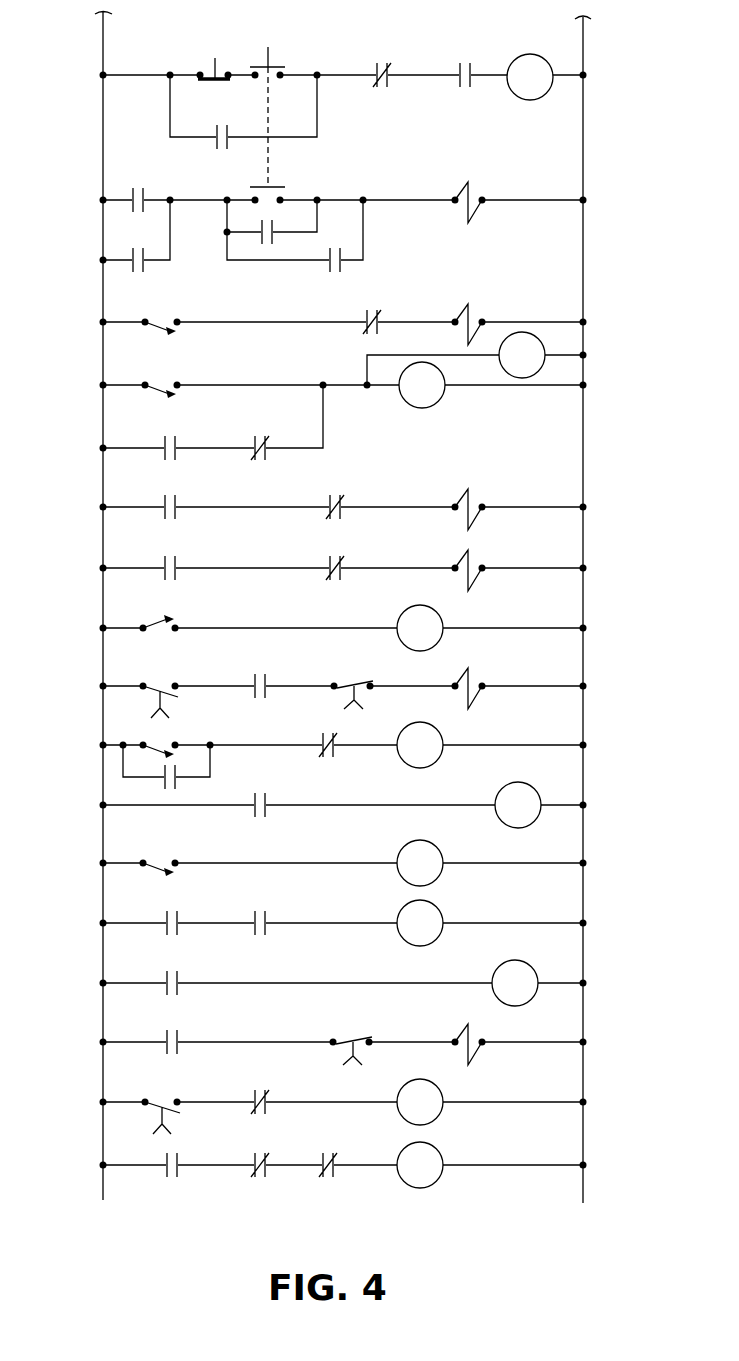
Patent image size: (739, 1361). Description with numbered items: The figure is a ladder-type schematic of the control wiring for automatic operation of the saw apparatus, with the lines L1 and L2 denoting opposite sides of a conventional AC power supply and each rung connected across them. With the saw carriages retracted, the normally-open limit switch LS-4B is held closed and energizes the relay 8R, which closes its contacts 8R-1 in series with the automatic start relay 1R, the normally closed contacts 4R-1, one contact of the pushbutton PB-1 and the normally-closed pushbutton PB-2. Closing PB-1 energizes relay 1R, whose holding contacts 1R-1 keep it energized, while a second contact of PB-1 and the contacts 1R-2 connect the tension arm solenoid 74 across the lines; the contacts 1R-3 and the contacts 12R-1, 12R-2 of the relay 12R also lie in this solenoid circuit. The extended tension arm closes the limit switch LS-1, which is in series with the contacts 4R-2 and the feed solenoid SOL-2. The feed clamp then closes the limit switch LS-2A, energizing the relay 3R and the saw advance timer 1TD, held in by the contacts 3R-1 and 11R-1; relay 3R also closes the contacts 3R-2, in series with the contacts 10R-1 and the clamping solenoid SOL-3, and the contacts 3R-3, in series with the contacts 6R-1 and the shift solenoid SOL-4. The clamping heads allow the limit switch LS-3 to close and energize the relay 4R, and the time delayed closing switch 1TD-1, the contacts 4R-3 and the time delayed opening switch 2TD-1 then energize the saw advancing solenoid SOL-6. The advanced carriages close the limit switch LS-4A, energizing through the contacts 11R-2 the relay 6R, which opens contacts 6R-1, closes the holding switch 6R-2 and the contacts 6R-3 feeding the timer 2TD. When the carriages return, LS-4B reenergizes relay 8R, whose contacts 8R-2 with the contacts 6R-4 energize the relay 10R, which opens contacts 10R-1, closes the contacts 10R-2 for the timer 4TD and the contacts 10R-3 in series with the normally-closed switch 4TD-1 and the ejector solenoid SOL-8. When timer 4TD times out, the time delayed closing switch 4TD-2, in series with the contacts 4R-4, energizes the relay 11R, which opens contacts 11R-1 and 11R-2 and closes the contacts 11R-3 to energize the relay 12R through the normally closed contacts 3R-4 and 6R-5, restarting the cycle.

The power supply line L1 is at (102, 123).
The power supply line L2 is at (584, 123).
The normally-open pushbutton PB-1 is at (268, 47).
The normally-closed pushbutton PB-2 is at (215, 59).
The automatic start relay 1R is at (530, 77).
The holding contacts 1R-1 is at (223, 150).
The relay contacts 1R-2 is at (138, 188).
The relay contacts 1R-3 is at (272, 220).
The normally closed relay contacts 4R-1 is at (383, 63).
The normally-open switch contacts 8R-1 is at (465, 63).
The switch contacts 12R-1 is at (139, 273).
The switch contacts 12R-2 is at (336, 273).
The tension arm solenoid 74 is at (466, 185).
The normally-open limit switch LS-1 is at (158, 329).
The normally-closed relay contacts 4R-2 is at (365, 333).
The solenoid SOL-2 is at (469, 306).
The saw advance timer 1TD is at (522, 355).
The normally-open limit switch LS-2A is at (162, 384).
The relay 3R is at (422, 385).
The holding contacts 3R-1 is at (172, 437).
The normally-closed relay contacts 11R-1 is at (257, 434).
The relay contacts 3R-2 is at (170, 495).
The normally closed relay contacts 10R-1 is at (333, 492).
The solenoid SOL-3 is at (469, 490).
The relay contacts 3R-3 is at (170, 556).
The normally-closed contacts 6R-1 is at (333, 553).
The solenoid SOL-4 is at (499, 562).
The normally-closed limit switch LS-3 is at (172, 619).
The relay 4R is at (420, 628).
The time delayed closing switch 1TD-1 is at (162, 683).
The switch contacts 4R-3 is at (260, 674).
The time delayed opening switch 2TD-1 is at (350, 683).
The solenoid SOL-6 is at (470, 680).
The normally-open limit switch LS-4A is at (160, 745).
The normally-closed switch contacts 11R-2 is at (330, 757).
The relay 6R is at (420, 745).
The holding switch 6R-2 is at (168, 789).
The relay contacts 6R-3 is at (260, 793).
The timer 2TD is at (518, 805).
The normally-open limit switch LS-4B is at (160, 863).
The relay 8R is at (420, 863).
The relay contacts 8R-2 is at (172, 910).
The relay contacts 6R-4 is at (260, 910).
The relay 10R is at (420, 923).
The relay contacts 10R-2 is at (174, 972).
The timer 4TD is at (515, 983).
The relay contacts 10R-3 is at (174, 1030).
The time delayed opening switch 4TD-1 is at (350, 1036).
The solenoid SOL-8 is at (476, 1055).
The time delayed closing switch 4TD-2 is at (157, 1100).
The normally closed relay contacts 4R-4 is at (262, 1090).
The relay 11R is at (420, 1102).
The relay contacts 11R-3 is at (172, 1178).
The normally closed contacts 3R-4 is at (260, 1178).
The normally closed contacts 6R-5 is at (335, 1178).
The relay 12R is at (420, 1165).